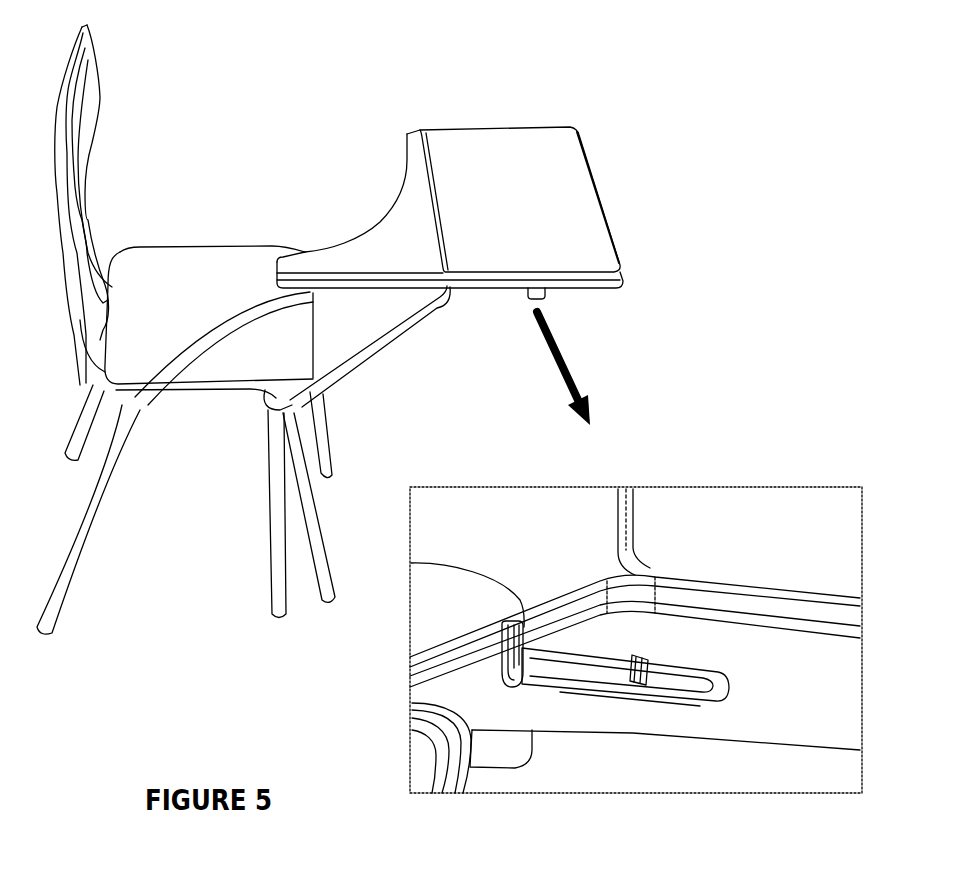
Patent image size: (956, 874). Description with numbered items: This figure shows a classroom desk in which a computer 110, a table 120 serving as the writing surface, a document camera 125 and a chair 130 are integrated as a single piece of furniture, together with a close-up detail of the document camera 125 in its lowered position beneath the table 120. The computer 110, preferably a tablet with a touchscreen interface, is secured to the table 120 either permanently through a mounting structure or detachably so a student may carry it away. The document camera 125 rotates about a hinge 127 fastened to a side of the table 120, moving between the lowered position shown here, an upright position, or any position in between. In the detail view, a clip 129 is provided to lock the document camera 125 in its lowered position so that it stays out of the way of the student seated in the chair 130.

The computer 110 is at (534, 205).
The table 120 is at (428, 258).
The document camera 125 is at (655, 711).
The hinge 127 is at (496, 602).
The clip 129 is at (652, 647).
The chair 130 is at (210, 312).